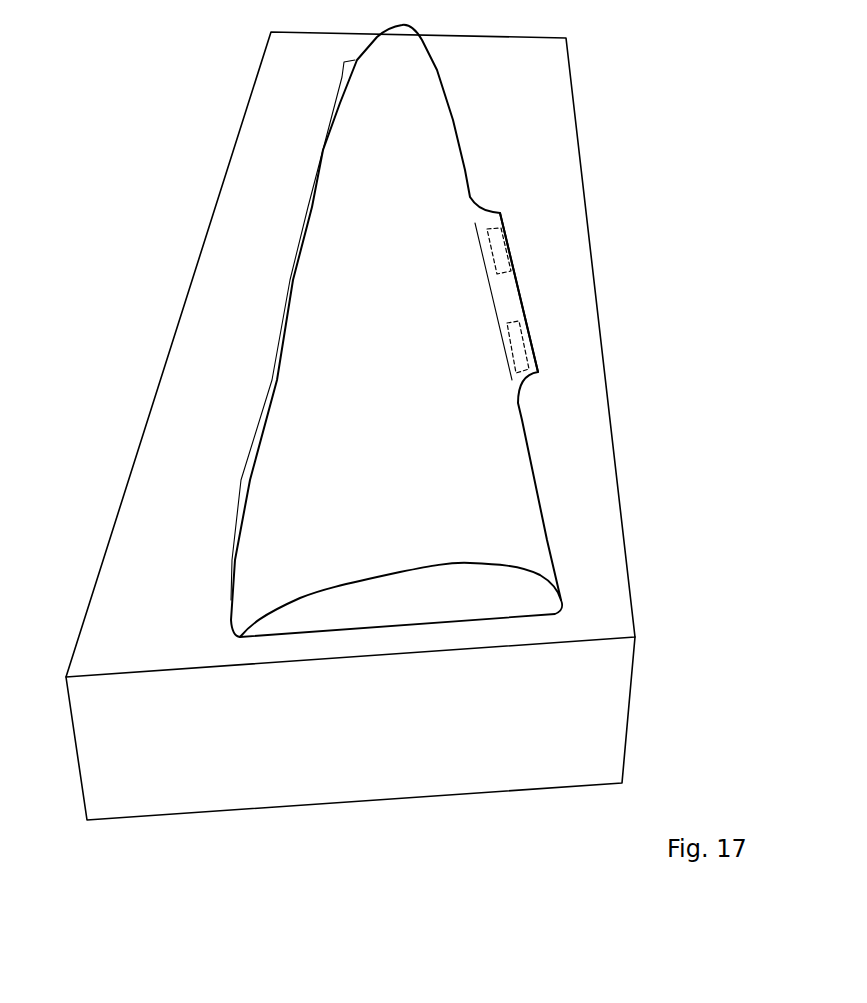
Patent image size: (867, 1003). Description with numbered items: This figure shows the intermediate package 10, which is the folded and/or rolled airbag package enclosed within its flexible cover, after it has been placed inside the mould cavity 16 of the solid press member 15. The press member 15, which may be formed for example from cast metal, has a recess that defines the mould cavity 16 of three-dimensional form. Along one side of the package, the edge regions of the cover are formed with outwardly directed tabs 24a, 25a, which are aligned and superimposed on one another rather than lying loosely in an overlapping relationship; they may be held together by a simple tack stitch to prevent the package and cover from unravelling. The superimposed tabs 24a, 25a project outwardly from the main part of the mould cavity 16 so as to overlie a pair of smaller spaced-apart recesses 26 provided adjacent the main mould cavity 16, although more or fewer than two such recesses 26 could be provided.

The intermediate package 10 is at (312, 272).
The press member 15 is at (400, 737).
The mould cavity 16 is at (313, 637).
The tab 24a is at (512, 293).
The tab 25a is at (493, 301).
The recess 26 is at (500, 228).